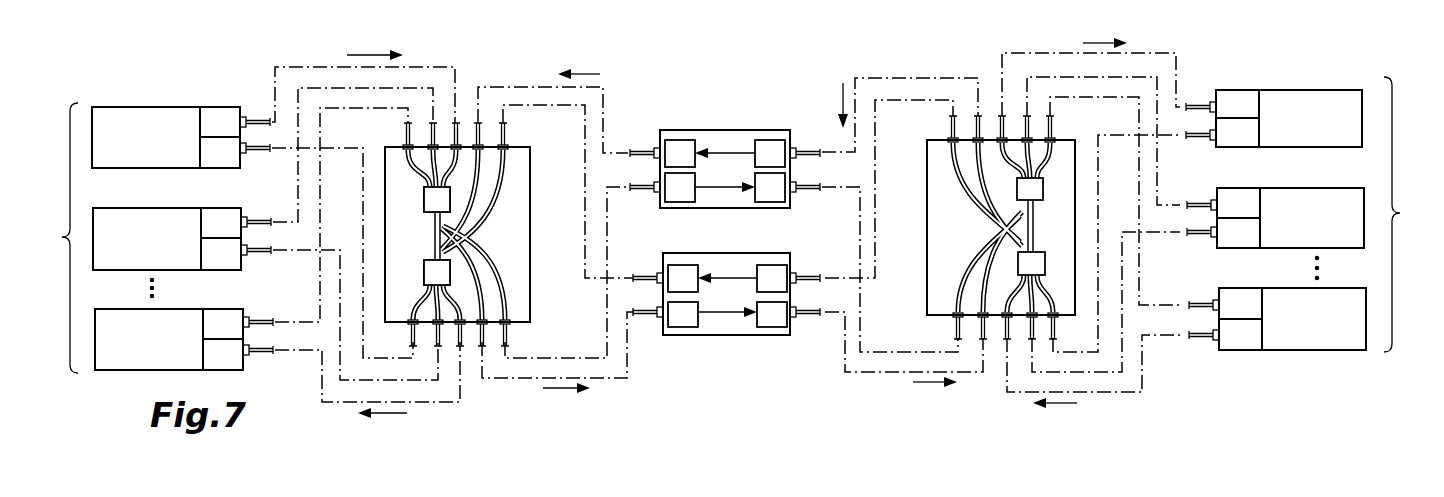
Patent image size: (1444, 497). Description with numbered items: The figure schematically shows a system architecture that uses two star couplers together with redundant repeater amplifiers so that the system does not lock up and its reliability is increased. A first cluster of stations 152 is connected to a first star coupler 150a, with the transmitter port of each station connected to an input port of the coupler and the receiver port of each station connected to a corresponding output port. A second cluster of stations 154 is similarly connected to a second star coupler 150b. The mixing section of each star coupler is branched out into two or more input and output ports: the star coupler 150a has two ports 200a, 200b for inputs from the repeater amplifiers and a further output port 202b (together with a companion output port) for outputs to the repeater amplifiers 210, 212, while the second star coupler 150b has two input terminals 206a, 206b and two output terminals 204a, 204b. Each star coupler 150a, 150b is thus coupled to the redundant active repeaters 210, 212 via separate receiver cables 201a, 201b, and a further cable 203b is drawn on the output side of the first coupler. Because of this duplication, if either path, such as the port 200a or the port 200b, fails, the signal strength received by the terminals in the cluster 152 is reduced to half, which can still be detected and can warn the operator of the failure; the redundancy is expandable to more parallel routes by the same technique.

The stations 152 is at (70, 237).
The second set of stations 154 is at (1400, 213).
The star coupler 150a is at (540, 257).
The second star coupler 150b is at (915, 272).
The port 200a is at (508, 147).
The port 200b is at (471, 140).
The receiver cable 201a is at (585, 183).
The receiver cable 201b is at (605, 110).
The port 202b is at (509, 320).
The coupler port 203b is at (543, 357).
The output terminal 204a is at (978, 132).
The output terminal 204b is at (952, 135).
The input terminal 206a is at (1006, 337).
The input terminal 206b is at (958, 322).
The repeater amplifier 210 is at (697, 346).
The repeater amplifier 212 is at (742, 124).